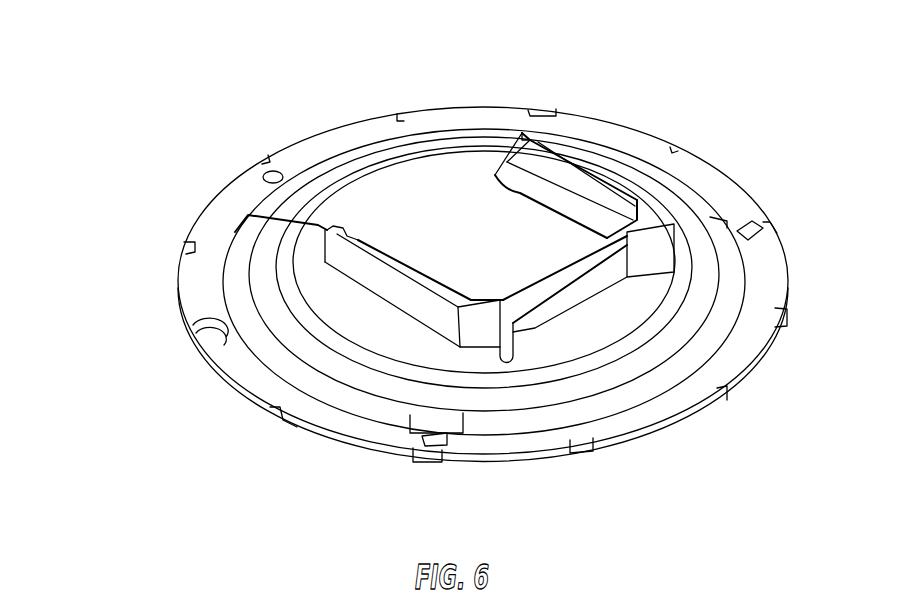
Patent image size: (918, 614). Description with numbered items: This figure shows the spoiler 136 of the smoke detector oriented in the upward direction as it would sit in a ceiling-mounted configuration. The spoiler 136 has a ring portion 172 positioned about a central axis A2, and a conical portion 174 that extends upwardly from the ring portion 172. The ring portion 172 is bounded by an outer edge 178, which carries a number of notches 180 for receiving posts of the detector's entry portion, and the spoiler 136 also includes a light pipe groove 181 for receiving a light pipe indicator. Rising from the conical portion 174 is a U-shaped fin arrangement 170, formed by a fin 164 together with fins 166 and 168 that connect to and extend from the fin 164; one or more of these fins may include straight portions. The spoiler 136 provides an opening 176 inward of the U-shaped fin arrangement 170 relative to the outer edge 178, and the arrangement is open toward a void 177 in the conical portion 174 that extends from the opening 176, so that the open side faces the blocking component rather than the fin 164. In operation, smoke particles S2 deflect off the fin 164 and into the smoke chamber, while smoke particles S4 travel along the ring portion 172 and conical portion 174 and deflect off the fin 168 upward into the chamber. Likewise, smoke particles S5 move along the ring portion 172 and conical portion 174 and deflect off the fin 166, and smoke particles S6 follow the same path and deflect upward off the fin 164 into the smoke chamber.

The spoiler 136 is at (130, 145).
The fin 164 is at (570, 290).
The fin 166 is at (582, 186).
The fin 168 is at (425, 293).
The U-shaped fin arrangement 170 is at (637, 135).
The ring portion 172 is at (322, 148).
The conical portion 174 is at (343, 307).
The opening 176 is at (462, 252).
The void 177 is at (330, 188).
The outer edge 178 is at (483, 107).
The notches 180 is at (540, 112).
The light pipe groove 181 is at (193, 337).
The smoke particles S2 is at (547, 212).
The smoke particles S4 is at (367, 323).
The smoke particles S5 is at (622, 196).
The smoke particles S6 is at (588, 219).
The central axis A2 is at (487, 258).